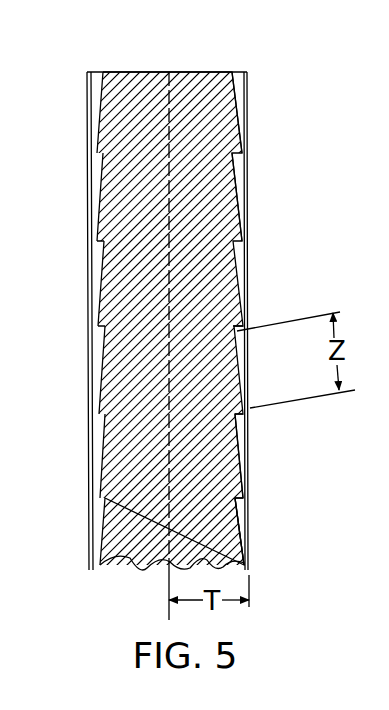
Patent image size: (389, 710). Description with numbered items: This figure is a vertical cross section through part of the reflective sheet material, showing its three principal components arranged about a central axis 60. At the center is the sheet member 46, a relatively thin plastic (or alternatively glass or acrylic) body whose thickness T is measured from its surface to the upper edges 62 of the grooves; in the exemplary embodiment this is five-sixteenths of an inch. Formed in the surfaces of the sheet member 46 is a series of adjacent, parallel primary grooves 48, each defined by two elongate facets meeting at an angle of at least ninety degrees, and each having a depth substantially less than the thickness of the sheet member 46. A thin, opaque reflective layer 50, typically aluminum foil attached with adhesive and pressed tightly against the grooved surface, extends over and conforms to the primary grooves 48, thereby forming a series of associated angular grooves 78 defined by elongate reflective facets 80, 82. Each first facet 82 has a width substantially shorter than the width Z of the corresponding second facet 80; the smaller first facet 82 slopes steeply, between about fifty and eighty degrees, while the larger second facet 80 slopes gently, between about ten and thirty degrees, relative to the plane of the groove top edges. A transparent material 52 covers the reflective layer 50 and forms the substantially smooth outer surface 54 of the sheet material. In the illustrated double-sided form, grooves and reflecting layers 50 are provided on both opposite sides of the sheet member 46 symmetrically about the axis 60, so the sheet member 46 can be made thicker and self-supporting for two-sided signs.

The sheet member 46 is at (197, 105).
The central axis 60 is at (166, 118).
The upper edges of the grooves 62 is at (247, 157).
The primary grooves 48 is at (246, 264).
The reflective layer 50 is at (247, 273).
The transparent material 52 is at (97, 335).
The angular grooves 78 is at (243, 420).
The smooth outer surface 54 is at (250, 465).
The first facet 82 is at (240, 503).
The second facet 80 is at (240, 523).